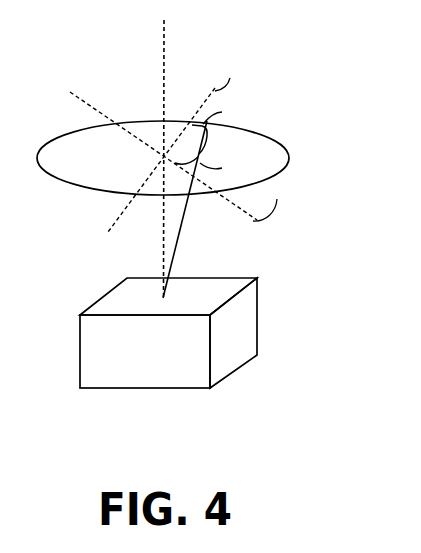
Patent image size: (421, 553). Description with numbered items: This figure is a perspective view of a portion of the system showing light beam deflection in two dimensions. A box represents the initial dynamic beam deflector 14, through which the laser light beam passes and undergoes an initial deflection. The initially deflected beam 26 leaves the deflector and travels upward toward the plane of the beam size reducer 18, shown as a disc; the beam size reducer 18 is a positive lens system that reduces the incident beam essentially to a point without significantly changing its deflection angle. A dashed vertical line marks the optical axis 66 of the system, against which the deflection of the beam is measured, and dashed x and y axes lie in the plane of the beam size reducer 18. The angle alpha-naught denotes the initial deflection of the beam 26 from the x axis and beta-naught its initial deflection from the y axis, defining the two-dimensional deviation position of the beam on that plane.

The initial dynamic beam deflector 14 is at (257, 318).
The beam size reducer 18 is at (264, 130).
The initially deflected beam 26 is at (178, 252).
The optical axis 66 is at (166, 48).